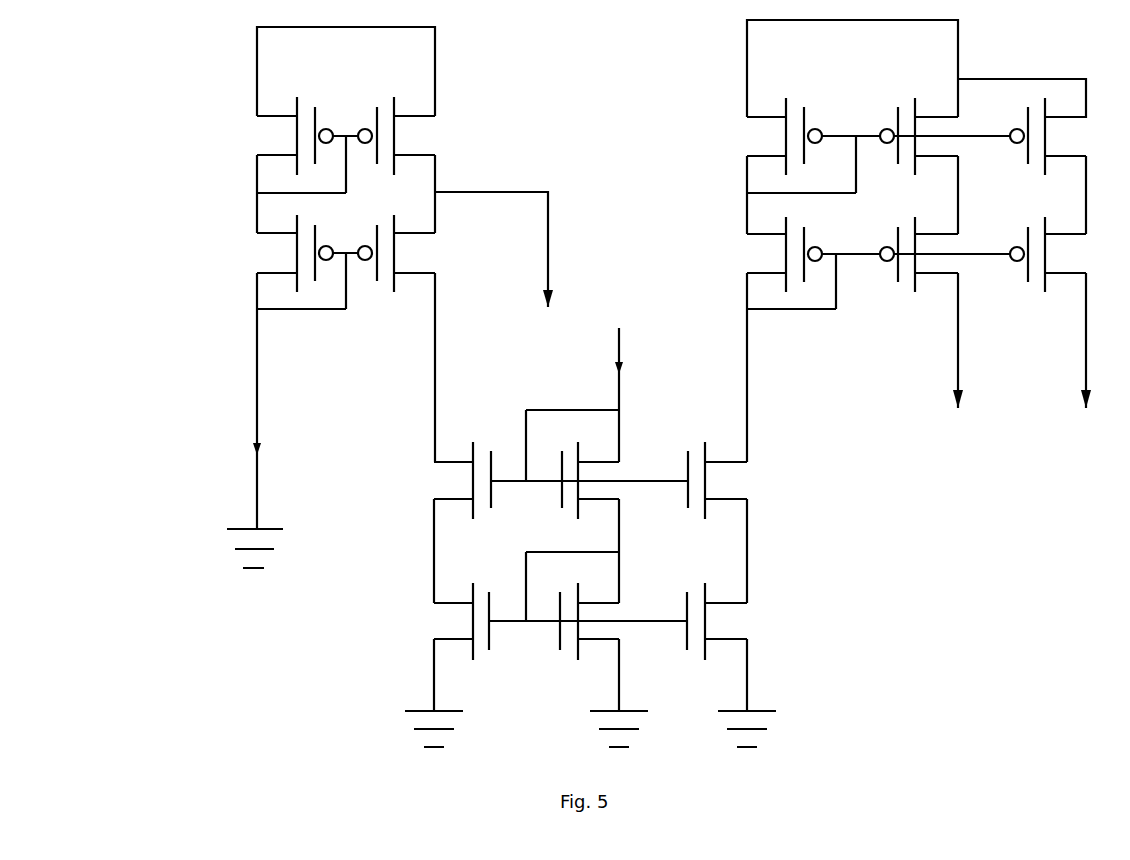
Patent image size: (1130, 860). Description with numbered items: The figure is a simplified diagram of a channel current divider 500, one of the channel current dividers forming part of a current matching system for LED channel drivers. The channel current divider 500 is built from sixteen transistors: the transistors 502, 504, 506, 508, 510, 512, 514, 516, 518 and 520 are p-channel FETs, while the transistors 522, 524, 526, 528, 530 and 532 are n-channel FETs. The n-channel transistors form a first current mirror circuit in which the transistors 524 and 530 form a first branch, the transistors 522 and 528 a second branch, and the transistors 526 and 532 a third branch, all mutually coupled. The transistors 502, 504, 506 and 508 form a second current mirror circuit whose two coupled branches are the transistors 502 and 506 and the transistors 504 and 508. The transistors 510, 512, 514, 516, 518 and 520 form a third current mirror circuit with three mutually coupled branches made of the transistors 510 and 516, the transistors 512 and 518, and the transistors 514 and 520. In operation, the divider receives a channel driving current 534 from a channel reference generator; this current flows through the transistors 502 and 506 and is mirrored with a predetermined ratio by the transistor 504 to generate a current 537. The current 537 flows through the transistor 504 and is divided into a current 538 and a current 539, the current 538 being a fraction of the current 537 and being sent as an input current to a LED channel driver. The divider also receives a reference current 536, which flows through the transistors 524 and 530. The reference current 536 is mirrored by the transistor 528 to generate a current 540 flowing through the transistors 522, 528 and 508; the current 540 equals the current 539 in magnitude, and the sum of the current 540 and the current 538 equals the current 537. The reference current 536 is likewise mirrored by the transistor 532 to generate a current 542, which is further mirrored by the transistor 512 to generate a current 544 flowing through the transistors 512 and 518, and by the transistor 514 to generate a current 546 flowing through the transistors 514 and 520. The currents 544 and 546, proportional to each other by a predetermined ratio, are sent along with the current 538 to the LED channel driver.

The channel current divider 500 is at (152, 730).
The transistor 502 is at (259, 134).
The transistor 504 is at (436, 117).
The transistor 506 is at (261, 235).
The transistor 508 is at (438, 262).
The transistor 510 is at (805, 117).
The transistor 512 is at (925, 115).
The transistor 514 is at (1070, 118).
The transistor 516 is at (804, 240).
The transistor 518 is at (928, 275).
The transistor 520 is at (1075, 272).
The transistor 522 is at (505, 456).
The transistor 524 is at (560, 487).
The transistor 526 is at (722, 460).
The transistor 528 is at (490, 641).
The transistor 530 is at (598, 641).
The transistor 532 is at (735, 641).
The channel driving current 534 is at (252, 448).
The reference current 536 is at (618, 355).
The current 537 is at (436, 65).
The current 538 is at (549, 208).
The current 539 is at (436, 205).
The current 540 is at (432, 668).
The current 542 is at (757, 641).
The current 544 is at (958, 315).
The current 546 is at (1086, 315).